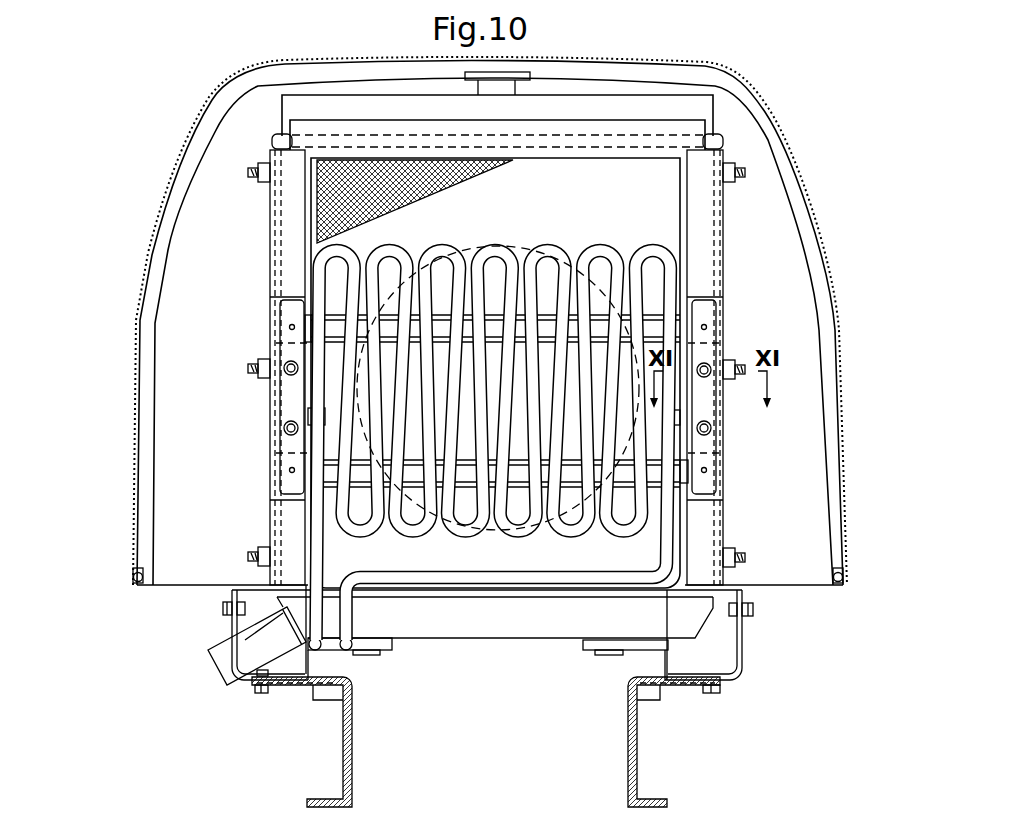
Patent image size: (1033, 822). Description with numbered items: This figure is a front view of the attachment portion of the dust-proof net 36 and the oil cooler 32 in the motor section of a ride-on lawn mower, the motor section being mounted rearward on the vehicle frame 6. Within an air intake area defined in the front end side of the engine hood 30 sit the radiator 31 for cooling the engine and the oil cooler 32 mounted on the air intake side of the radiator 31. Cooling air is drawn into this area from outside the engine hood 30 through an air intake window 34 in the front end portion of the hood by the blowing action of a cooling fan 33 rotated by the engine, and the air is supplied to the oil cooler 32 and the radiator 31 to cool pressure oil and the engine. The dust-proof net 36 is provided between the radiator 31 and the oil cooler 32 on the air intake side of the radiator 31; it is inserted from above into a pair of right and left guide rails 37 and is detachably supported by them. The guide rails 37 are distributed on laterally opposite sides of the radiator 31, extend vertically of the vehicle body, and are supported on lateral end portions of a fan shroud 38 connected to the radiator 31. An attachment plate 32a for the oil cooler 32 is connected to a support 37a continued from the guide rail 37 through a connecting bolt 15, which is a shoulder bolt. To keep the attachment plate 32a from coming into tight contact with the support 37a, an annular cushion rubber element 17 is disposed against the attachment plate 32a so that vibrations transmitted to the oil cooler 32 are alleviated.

The vehicle frame 6 is at (343, 748).
The connecting bolt 15 is at (285, 428).
The annular cushion rubber element 17 is at (285, 361).
The engine hood 30 is at (137, 480).
The radiator 31 is at (708, 110).
The oil cooler 32 is at (549, 238).
The attachment plate 32a is at (290, 483).
The cooling fan 33 is at (592, 283).
The air intake window 34 is at (146, 197).
The dust-proof net 36 is at (320, 225).
The guide rails 37 is at (286, 253).
The support 37a is at (283, 374).
The fan shroud 38 is at (270, 193).